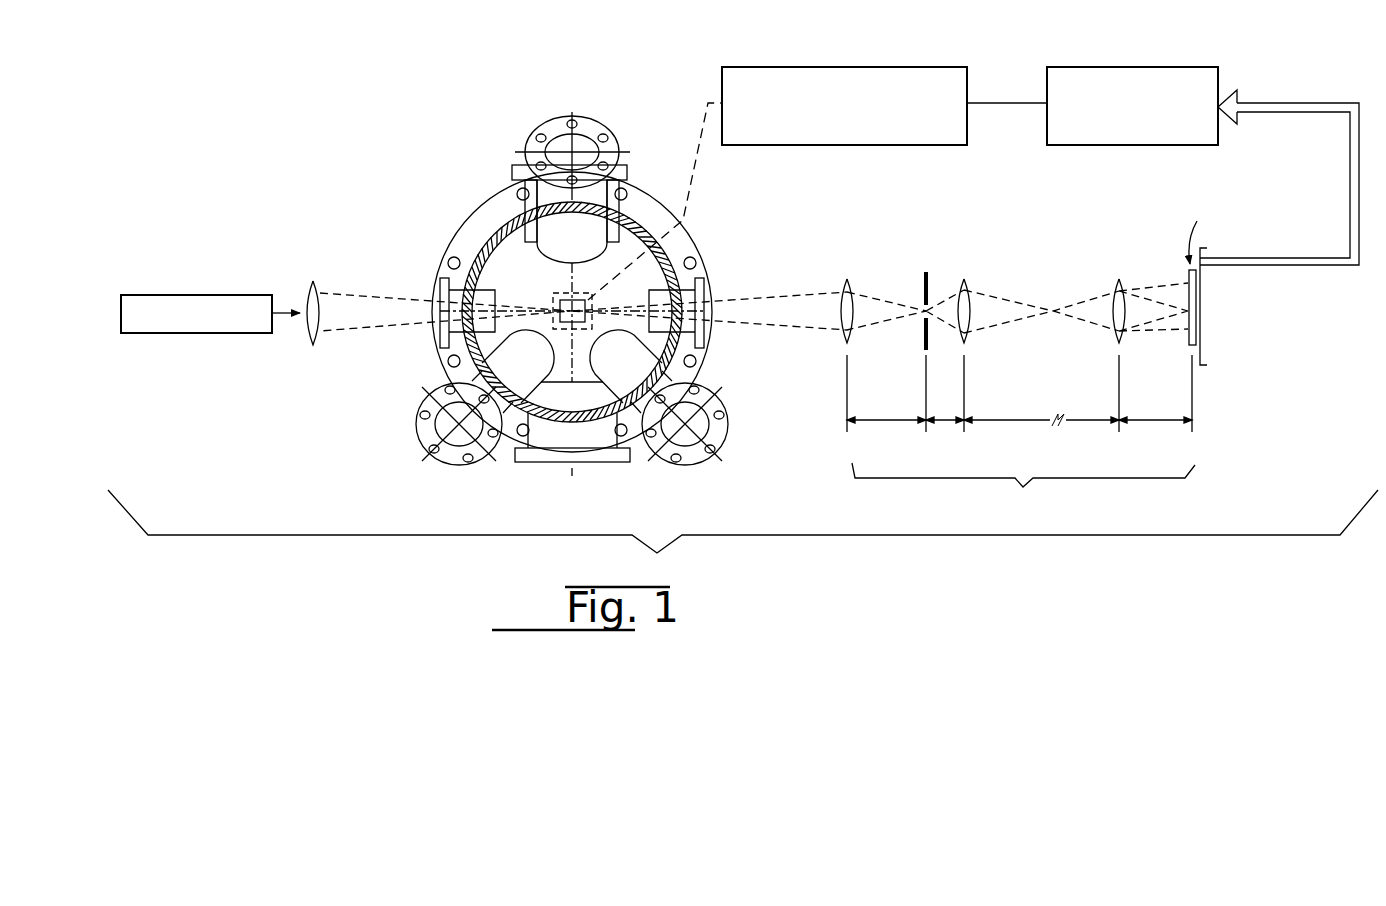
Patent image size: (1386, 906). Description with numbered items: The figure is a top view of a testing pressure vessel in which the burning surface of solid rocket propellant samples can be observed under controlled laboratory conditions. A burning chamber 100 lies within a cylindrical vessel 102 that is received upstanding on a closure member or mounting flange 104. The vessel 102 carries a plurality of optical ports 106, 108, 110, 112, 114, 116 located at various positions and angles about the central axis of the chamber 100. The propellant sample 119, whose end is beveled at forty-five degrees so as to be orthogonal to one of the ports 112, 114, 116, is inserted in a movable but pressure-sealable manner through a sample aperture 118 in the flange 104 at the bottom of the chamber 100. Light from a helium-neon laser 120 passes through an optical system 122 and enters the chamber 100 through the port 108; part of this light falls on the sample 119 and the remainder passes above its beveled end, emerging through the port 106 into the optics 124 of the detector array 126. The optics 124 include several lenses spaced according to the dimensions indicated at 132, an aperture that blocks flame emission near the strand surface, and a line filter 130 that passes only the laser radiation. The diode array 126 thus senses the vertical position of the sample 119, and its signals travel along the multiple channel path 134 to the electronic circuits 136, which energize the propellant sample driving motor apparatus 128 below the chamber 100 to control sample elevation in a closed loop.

The burning chamber 100 is at (534, 281).
The cylindrical vessel 102 is at (627, 217).
The mounting flange 104 is at (693, 240).
The optical port 106 is at (710, 290).
The optical port 108 is at (440, 300).
The optical port 110 is at (610, 462).
The optical port 112 is at (422, 435).
The optical port 114 is at (727, 412).
The optical port 116 is at (528, 140).
The sample aperture 118 is at (577, 297).
The propellant sample 119 is at (558, 330).
The laser 120 is at (200, 295).
The optical system 122 is at (303, 288).
The optical system 124 is at (1040, 198).
The diode array 126 is at (1203, 358).
The propellant sample driving motor apparatus 128 is at (833, 67).
The line filter 130 is at (1267, 208).
The lens spacing dimensions 132 is at (1021, 435).
The multiple channel path 134 is at (1305, 100).
The electronic circuits 136 is at (1130, 67).